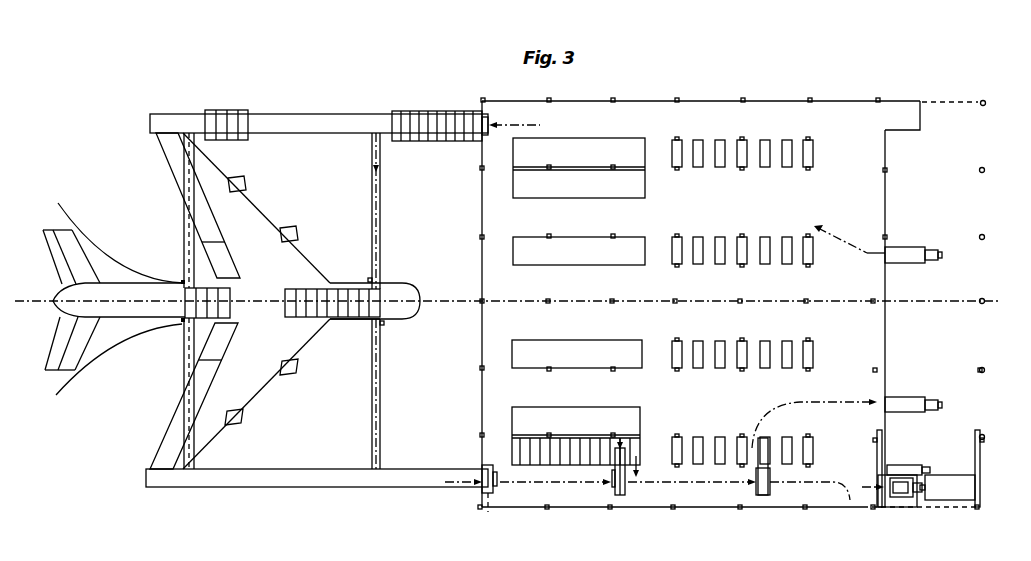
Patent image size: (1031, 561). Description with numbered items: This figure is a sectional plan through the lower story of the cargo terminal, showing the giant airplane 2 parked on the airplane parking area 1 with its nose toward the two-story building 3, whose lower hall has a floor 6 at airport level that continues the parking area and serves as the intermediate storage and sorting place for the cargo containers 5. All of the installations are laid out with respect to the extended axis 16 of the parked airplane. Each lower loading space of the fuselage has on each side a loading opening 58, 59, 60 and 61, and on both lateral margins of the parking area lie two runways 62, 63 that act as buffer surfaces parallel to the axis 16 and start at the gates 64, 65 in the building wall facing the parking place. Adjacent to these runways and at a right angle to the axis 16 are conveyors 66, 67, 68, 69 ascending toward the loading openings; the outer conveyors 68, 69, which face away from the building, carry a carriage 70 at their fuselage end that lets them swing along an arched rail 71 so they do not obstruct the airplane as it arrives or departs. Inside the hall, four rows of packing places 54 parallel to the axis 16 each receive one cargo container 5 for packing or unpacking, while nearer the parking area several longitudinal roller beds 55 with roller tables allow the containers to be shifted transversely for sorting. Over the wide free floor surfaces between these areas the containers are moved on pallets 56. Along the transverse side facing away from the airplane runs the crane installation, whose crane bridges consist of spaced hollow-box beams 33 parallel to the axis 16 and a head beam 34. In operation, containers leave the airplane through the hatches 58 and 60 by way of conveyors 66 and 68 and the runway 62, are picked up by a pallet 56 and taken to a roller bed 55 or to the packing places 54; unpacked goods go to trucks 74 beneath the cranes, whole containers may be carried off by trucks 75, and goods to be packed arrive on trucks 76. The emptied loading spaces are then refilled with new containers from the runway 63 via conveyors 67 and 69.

The airplane parking area 1 is at (438, 203).
The giant airplane 2 is at (43, 230).
The two-story building 3 is at (480, 100).
The cargo containers 5 is at (237, 137).
The floor 6 is at (829, 220).
The extended axis 16 is at (456, 303).
The beams 33 is at (962, 474).
The head beam 34 is at (977, 488).
The packing places 54 is at (805, 142).
The roller beds 55 is at (638, 157).
The pallets 56 is at (497, 483).
The loading opening 58 is at (383, 325).
The loading opening 59 is at (380, 281).
The loading opening 60 is at (196, 322).
The loading opening 61 is at (195, 282).
The runway 62 is at (315, 488).
The runway 63 is at (316, 113).
The gate 64 is at (483, 141).
The gate 65 is at (482, 464).
The conveyor 66 is at (375, 377).
The conveyor 67 is at (377, 233).
The conveyor 68 is at (183, 375).
The conveyor 69 is at (187, 222).
The carriage 70 is at (184, 282).
The arched rail 71 is at (65, 208).
The trucks 74 is at (918, 397).
The trucks 75 is at (910, 464).
The trucks 76 is at (922, 247).